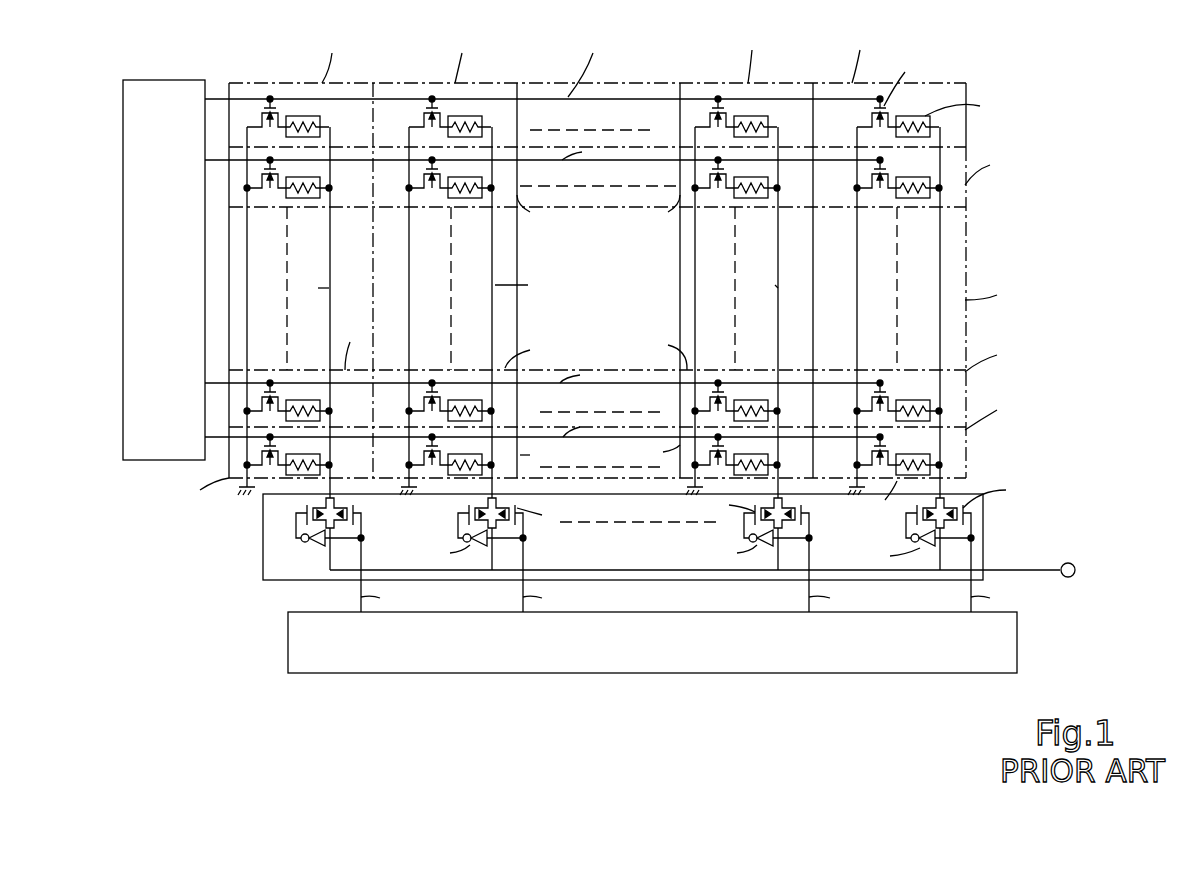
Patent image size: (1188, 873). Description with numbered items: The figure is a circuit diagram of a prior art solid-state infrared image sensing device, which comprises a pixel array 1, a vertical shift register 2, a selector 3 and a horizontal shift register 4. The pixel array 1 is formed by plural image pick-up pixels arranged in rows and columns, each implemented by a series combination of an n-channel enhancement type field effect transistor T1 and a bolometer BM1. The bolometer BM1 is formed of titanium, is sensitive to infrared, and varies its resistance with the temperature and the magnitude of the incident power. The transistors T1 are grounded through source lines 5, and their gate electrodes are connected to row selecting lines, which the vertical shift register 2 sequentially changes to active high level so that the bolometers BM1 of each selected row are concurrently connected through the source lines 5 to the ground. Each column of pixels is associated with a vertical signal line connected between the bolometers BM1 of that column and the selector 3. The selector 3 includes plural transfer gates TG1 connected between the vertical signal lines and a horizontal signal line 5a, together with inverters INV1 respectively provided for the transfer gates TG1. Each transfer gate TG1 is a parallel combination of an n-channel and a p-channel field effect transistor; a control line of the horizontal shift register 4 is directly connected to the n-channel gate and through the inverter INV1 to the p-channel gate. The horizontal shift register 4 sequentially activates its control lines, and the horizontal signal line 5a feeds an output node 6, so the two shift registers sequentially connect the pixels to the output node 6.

The pixel array 1 is at (987, 256).
The vertical shift register 2 is at (123, 230).
The selector 3 is at (629, 542).
The horizontal shift register 4 is at (612, 673).
The source lines 5 is at (585, 297).
The horizontal signal line 5a is at (1038, 568).
The output node 6 is at (1070, 578).
The n-channel enhancement type field effect transistor T1 is at (263, 121).
The bolometer BM1 is at (321, 125).
The transfer gate TG1 is at (355, 508).
The inverter INV1 is at (315, 548).